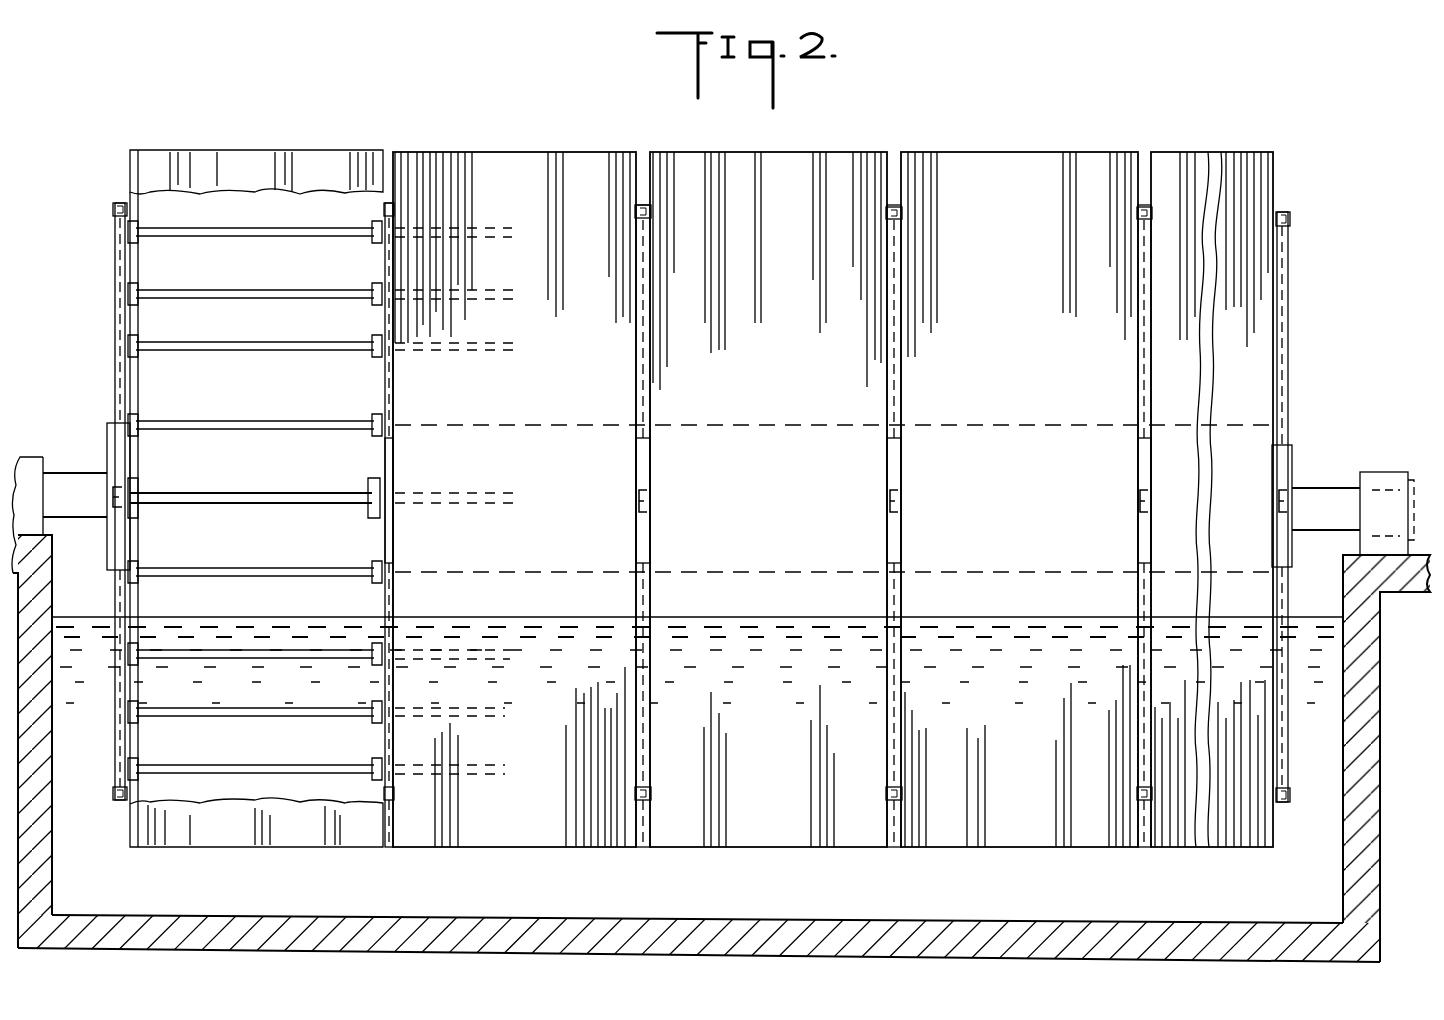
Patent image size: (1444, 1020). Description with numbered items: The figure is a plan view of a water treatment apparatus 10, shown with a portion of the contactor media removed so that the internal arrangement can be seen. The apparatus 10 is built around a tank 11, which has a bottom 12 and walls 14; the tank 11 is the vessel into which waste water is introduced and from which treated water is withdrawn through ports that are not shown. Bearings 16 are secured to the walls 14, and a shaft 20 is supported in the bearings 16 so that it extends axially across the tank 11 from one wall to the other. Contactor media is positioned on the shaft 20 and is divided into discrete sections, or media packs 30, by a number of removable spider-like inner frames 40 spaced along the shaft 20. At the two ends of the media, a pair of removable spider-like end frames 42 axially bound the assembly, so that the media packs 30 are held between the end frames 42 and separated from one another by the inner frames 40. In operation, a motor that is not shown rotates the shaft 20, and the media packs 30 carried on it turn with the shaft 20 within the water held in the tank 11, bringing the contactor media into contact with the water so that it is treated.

The water treatment apparatus 10 is at (1326, 271).
The tank 11 is at (1316, 820).
The bottom 12 is at (772, 925).
The walls 14 is at (40, 757).
The bearings 16 is at (33, 460).
The shaft 20 is at (74, 478).
The media packs 30 is at (928, 167).
The inner frames 40 is at (392, 203).
The end frames 42 is at (118, 207).